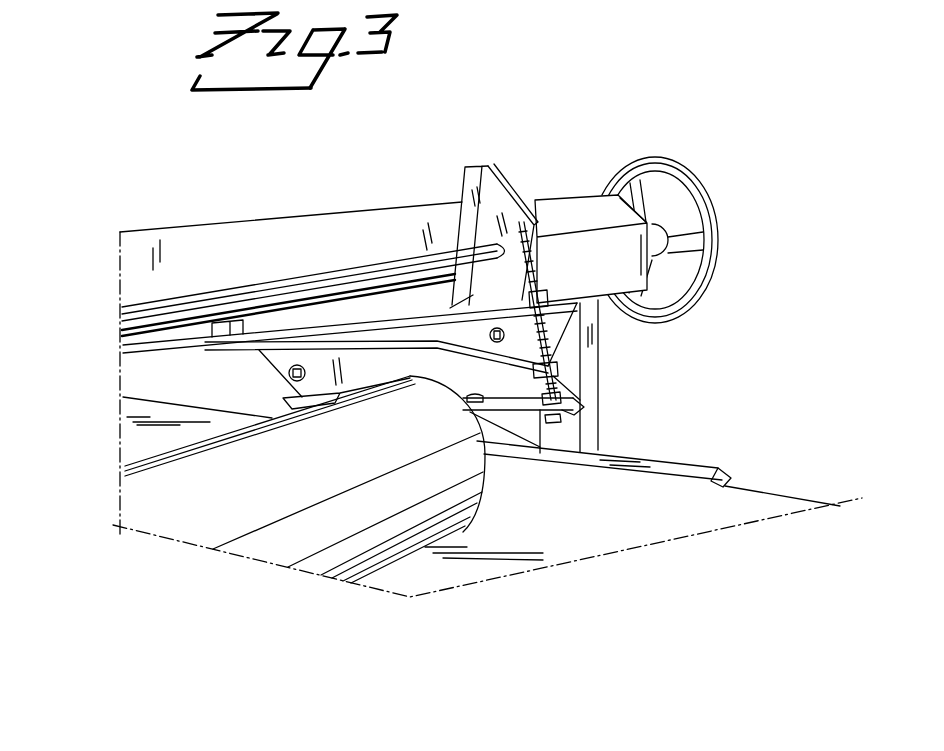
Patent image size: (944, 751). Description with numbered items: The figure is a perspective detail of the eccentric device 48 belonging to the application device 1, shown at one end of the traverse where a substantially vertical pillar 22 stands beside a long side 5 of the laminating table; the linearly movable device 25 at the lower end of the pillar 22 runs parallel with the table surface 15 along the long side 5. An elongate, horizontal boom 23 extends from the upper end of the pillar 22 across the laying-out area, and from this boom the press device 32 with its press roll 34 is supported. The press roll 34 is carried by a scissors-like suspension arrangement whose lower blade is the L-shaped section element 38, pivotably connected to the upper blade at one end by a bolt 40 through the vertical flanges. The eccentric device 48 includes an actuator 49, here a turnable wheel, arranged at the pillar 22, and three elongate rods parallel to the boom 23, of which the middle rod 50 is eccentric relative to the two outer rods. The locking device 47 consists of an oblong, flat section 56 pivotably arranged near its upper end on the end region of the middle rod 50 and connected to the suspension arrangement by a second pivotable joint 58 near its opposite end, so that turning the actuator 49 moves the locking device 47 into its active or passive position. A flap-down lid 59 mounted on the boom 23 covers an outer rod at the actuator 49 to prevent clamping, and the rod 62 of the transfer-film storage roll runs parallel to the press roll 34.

The application device 1 is at (298, 212).
The long sides 5 is at (750, 490).
The table surface 15 is at (732, 512).
The vertical pillars 22 is at (590, 376).
The boom 23 is at (212, 242).
The movable device 25 is at (655, 458).
The press device 32 is at (578, 404).
The press roll 34 is at (170, 472).
The lower section element 38 is at (312, 385).
The bolt 40 is at (286, 372).
The locking device 47 is at (470, 166).
The eccentric device 48 is at (145, 290).
The actuator 49 is at (665, 172).
The middle rod 50 is at (358, 266).
The flat section 56 is at (494, 198).
The second pivotable joint 58 is at (505, 335).
The flap-down lid 59 is at (585, 222).
The rod 62 is at (122, 362).